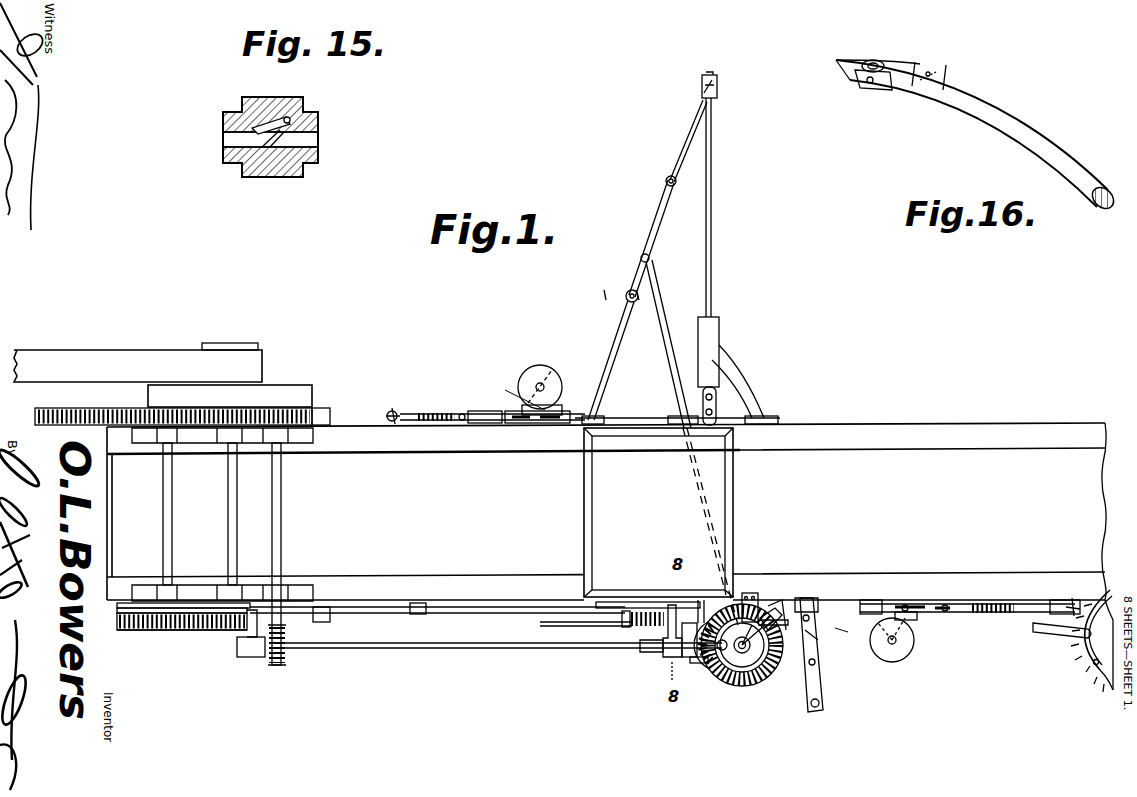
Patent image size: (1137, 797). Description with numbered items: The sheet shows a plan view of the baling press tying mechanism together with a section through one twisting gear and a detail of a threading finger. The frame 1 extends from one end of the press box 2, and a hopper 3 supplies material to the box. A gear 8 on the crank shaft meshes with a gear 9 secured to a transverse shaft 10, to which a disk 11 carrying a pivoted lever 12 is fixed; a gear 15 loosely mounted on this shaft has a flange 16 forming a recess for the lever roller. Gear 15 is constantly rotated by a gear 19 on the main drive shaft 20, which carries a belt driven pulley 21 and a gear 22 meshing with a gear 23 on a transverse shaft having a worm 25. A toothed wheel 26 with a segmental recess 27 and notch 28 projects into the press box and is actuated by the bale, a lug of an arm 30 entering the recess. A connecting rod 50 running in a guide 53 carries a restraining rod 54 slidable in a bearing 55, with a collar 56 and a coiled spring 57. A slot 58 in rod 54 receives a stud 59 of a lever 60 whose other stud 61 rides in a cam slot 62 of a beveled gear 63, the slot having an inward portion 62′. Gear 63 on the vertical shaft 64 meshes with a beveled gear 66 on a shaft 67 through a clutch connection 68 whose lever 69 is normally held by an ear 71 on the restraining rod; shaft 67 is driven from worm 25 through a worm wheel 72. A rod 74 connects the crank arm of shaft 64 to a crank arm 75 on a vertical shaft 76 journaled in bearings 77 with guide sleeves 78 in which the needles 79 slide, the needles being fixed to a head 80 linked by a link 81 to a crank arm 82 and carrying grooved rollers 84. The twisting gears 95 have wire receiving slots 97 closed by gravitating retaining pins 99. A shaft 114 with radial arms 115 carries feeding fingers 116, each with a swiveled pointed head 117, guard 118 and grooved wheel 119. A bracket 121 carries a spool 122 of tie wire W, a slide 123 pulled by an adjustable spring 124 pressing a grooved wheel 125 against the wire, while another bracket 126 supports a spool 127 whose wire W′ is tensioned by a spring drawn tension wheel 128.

In FIG. 1, the frame 1 is at (342, 436).
In FIG. 1, the press box 2 is at (829, 462).
In FIG. 1, the hopper 3 is at (586, 498).
In FIG. 1, the gear 8 is at (82, 410).
In FIG. 1, the gear 9 is at (152, 408).
In FIG. 1, the transverse shaft 10 is at (173, 512).
In FIG. 1, the disk 11 is at (190, 603).
In FIG. 1, the lever 12 is at (125, 603).
In FIG. 1, the gear 15 is at (178, 630).
In FIG. 1, the flange 16 is at (160, 625).
In FIG. 1, the gear 19 is at (242, 628).
In FIG. 1, the main drive shaft 20 is at (238, 520).
In FIG. 1, the belt driven pulley 21 is at (233, 343).
In FIG. 1, the gear 22 is at (250, 412).
In FIG. 1, the gear 23 is at (320, 410).
In FIG. 1, the worm 25 is at (290, 652).
In FIG. 1, the toothed wheel 26 is at (1104, 684).
In FIG. 1, the segmental recess 27 is at (1082, 648).
In FIG. 1, the notch 28 is at (1094, 666).
In FIG. 1, the arm 30 is at (1048, 633).
In FIG. 1, the connecting rod 50 is at (400, 606).
In FIG. 1, the guide 53 is at (438, 602).
In FIG. 1, the restraining rod 54 is at (603, 628).
In FIG. 1, the bearing 55 is at (670, 610).
In FIG. 1, the collar 56 is at (632, 630).
In FIG. 1, the coiled spring 57 is at (636, 604).
In FIG. 1, the slot 58 is at (752, 612).
In FIG. 1, the stud 59 is at (790, 628).
In FIG. 1, the lever 60 is at (775, 618).
In FIG. 1, the stud 61 is at (758, 660).
In FIG. 1, the cam slot 62 is at (745, 672).
In FIG. 1, the inwardly extended portion of cam slot 62′ is at (812, 700).
In FIG. 1, the beveled gear 63 is at (818, 622).
In FIG. 1, the vertical shaft 64 is at (742, 662).
In FIG. 1, the beveled gear 66 is at (726, 640).
In FIG. 1, the shaft 67 is at (494, 646).
In FIG. 1, the clutch connection 68 is at (699, 663).
In FIG. 1, the lever 69 is at (688, 642).
In FIG. 1, the ear 71 is at (702, 622).
In FIG. 1, the worm wheel 72 is at (279, 662).
In FIG. 1, the rod 74 is at (666, 318).
In FIG. 1, the crank arm 75 is at (640, 260).
In FIG. 1, the vertical shaft 76 is at (626, 296).
In FIG. 1, the bearings 77 is at (610, 350).
In FIG. 1, the guide sleeve 78 is at (714, 346).
In FIG. 1, the needles 79 is at (712, 234).
In FIG. 1, the head 80 is at (718, 92).
In FIG. 1, the link 81 is at (690, 143).
In FIG. 1, the crank arm 82 is at (651, 222).
In FIG. 1, the grooved rollers 84 is at (738, 370).
In FIG. 15, the twisting gears 95 is at (292, 122).
In FIG. 15, the wire receiving slot 97 is at (312, 139).
In FIG. 15, the retaining pin 99 is at (284, 137).
In FIG. 1, the shaft 114 is at (822, 642).
In FIG. 1, the radial arms 115 is at (820, 690).
In FIG. 16, the feeding fingers 116 is at (1020, 113).
In FIG. 1, the feeding fingers 116 is at (818, 664).
In FIG. 16, the head 117 is at (908, 58).
In FIG. 1, the head 117 is at (812, 620).
In FIG. 16, the guard 118 is at (884, 90).
In FIG. 16, the grooved wheel 119 is at (871, 60).
In FIG. 1, the bracket 121 is at (540, 406).
In FIG. 1, the spool 122 is at (527, 367).
In FIG. 1, the slide 123 is at (480, 423).
In FIG. 1, the adjustable spring 124 is at (434, 422).
In FIG. 1, the grooved wheel 125 is at (500, 423).
In FIG. 1, the bracket 126 is at (910, 612).
In FIG. 1, the spool 127 is at (900, 660).
In FIG. 1, the tension wheel 128 is at (942, 610).
In FIG. 1, the tie wire W is at (518, 404).
In FIG. 1, the wire W′ is at (914, 622).